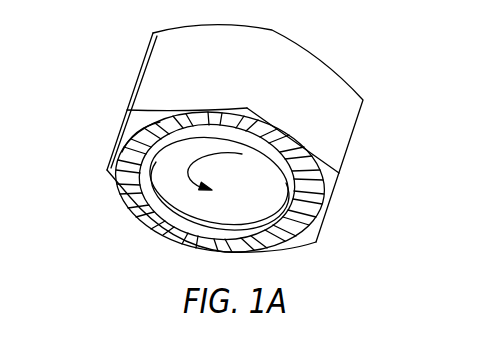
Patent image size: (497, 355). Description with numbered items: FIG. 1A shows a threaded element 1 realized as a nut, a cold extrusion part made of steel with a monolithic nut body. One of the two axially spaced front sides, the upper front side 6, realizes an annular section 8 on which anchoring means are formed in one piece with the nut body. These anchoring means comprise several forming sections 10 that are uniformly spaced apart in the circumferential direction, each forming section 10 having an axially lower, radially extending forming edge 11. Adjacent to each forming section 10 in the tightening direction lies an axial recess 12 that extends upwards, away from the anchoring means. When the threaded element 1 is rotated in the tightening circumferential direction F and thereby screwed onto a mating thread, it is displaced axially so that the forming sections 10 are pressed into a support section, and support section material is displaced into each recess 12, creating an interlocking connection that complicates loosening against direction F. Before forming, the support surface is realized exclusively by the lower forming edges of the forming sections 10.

The threaded element 1 is at (142, 230).
The axial front side 6 is at (133, 202).
The annular section 8 is at (163, 108).
The forming section 10 is at (188, 117).
The forming edge 11 is at (138, 113).
The axial recess 12 is at (142, 147).
The tightening circumferential direction F is at (132, 183).